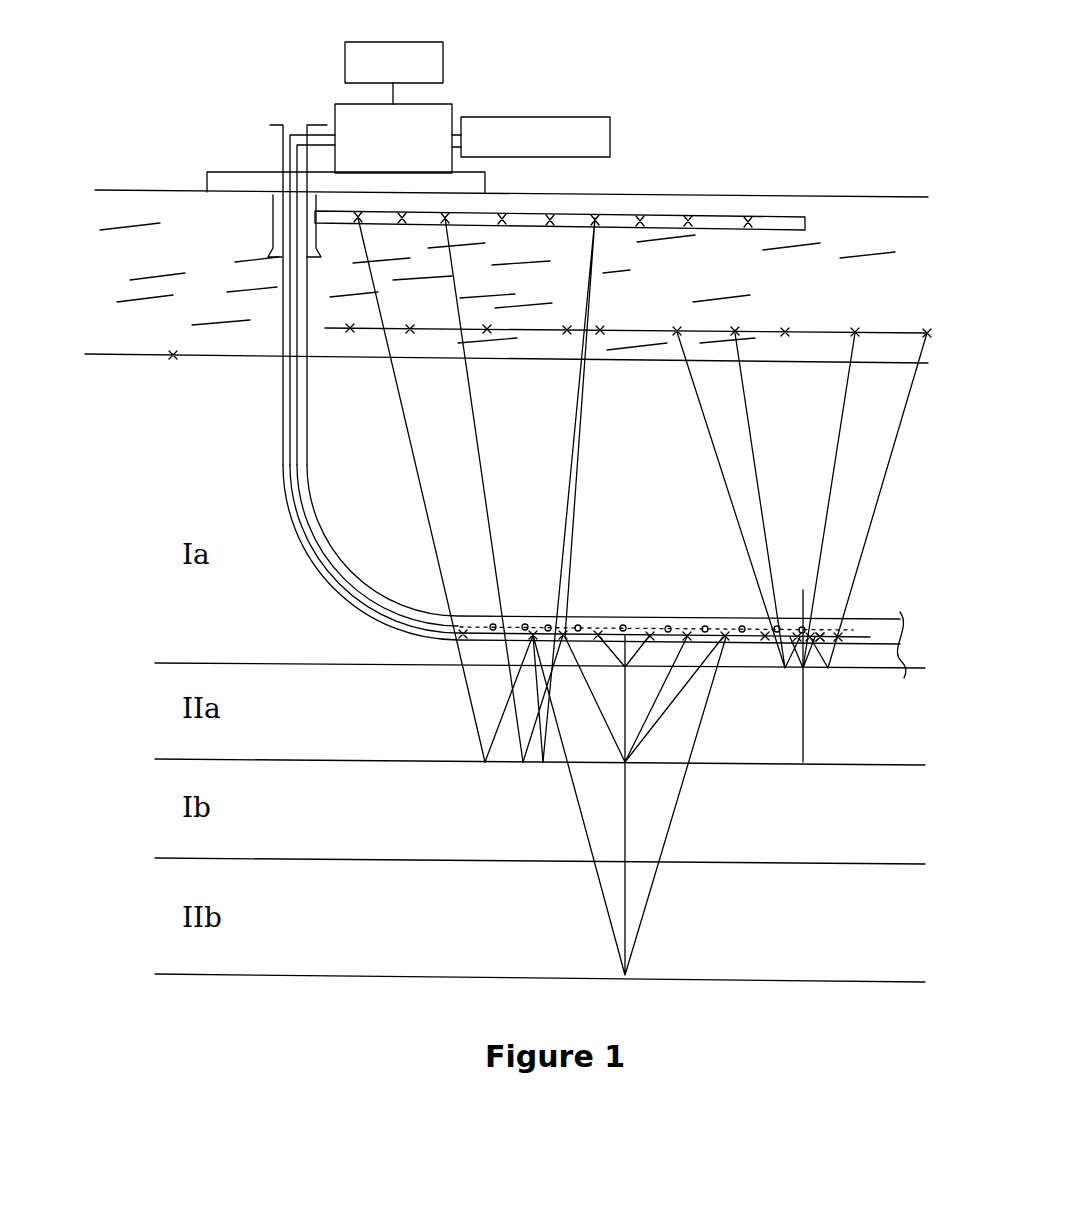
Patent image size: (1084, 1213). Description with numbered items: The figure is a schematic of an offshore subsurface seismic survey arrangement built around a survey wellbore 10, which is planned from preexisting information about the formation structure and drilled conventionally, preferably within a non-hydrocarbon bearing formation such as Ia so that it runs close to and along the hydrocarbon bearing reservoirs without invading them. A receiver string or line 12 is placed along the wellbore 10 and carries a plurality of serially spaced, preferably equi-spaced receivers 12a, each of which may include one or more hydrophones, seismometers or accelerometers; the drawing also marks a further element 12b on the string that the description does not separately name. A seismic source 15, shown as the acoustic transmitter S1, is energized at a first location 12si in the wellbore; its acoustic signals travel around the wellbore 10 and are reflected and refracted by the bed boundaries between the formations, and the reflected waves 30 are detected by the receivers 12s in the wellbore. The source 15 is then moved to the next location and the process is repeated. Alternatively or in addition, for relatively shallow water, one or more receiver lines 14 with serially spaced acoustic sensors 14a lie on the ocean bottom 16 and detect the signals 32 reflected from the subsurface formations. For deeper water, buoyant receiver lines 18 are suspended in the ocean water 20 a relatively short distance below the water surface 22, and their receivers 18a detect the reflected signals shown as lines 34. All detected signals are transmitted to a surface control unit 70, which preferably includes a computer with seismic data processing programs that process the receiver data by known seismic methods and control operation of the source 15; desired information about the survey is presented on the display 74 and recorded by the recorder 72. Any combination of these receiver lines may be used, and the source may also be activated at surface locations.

The survey wellbore 10 is at (280, 413).
The receiver string 12 is at (332, 582).
The receivers 12a is at (533, 635).
The borehole sensor 12b is at (704, 625).
The receivers 12s is at (822, 638).
The first source location 12si is at (810, 640).
The receiver lines 14 is at (613, 328).
The acoustic sensors 14a is at (347, 333).
The source 15 is at (623, 625).
The ocean bottom 16 is at (125, 352).
The receiver lines 18 is at (805, 222).
The receivers 18a is at (640, 217).
The ocean water 20 is at (222, 266).
The water surface 22 is at (735, 96).
The reflected waves 30 is at (563, 683).
The reflected signals 32 is at (708, 430).
The reflected signals 34 is at (407, 430).
The surface control unit 70 is at (338, 102).
The recorder 72 is at (548, 115).
The display 74 is at (412, 40).
The borehole seismic source S1 is at (801, 661).